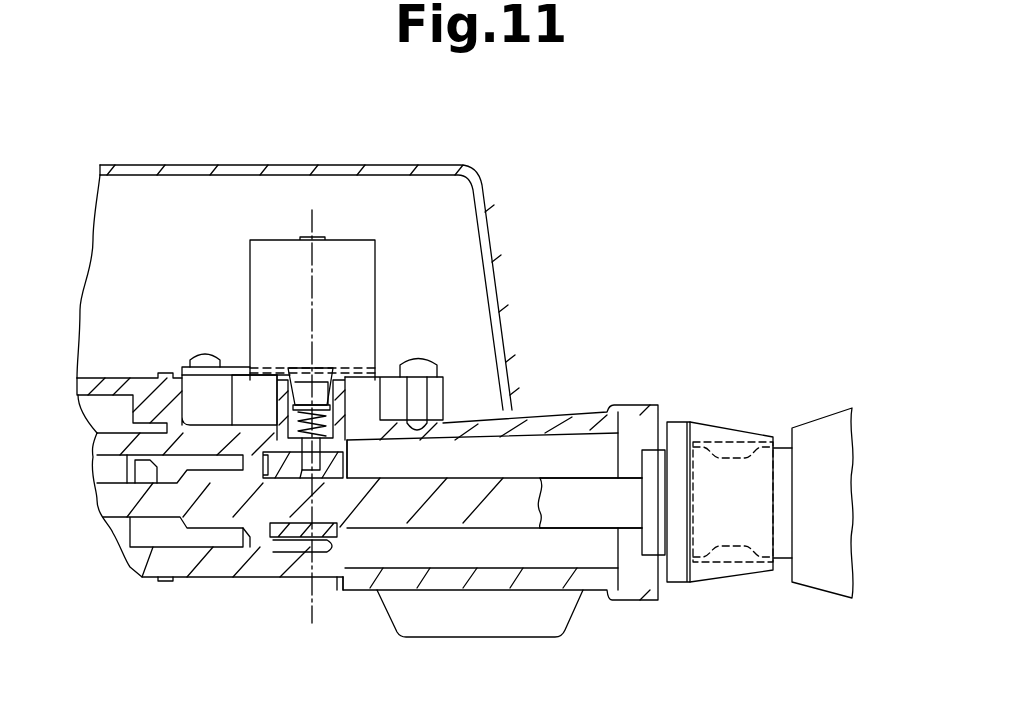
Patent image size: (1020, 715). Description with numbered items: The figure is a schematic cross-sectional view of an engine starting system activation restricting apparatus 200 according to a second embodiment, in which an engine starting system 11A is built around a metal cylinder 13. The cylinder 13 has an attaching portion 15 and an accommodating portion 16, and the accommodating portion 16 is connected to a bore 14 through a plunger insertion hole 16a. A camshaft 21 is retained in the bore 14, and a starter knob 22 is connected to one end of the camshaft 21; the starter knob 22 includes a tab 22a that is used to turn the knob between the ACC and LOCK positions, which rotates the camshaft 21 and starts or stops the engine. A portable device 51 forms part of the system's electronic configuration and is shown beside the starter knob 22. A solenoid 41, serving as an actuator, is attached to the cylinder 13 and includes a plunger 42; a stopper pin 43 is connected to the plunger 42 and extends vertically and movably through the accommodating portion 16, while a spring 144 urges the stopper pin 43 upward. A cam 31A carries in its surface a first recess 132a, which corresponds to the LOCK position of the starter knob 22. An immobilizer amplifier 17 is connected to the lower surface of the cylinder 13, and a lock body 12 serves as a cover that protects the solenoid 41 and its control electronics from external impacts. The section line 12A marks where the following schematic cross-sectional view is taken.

The engine starting system 11A is at (642, 184).
The lock body 12 is at (440, 166).
The section line 12a-12a 12A is at (296, 629).
The cylinder 13 is at (205, 578).
The bore 14 is at (540, 572).
The attaching portion 15 is at (190, 400).
The accommodating portion 16 is at (302, 368).
The plunger insertion hole 16a is at (270, 440).
The immobilizer amplifier 17 is at (468, 638).
The camshaft 21 is at (482, 522).
The starter knob 22 is at (678, 574).
The tab 22a is at (712, 432).
The cam 31A is at (337, 578).
The solenoid 41 is at (376, 268).
The plunger 42 is at (324, 372).
The stopper pin 43 is at (338, 482).
The portable device 51 is at (815, 425).
The first recess 132a is at (348, 461).
The spring 144 is at (385, 377).
The engine starting system activation restricting apparatus 200 is at (553, 278).